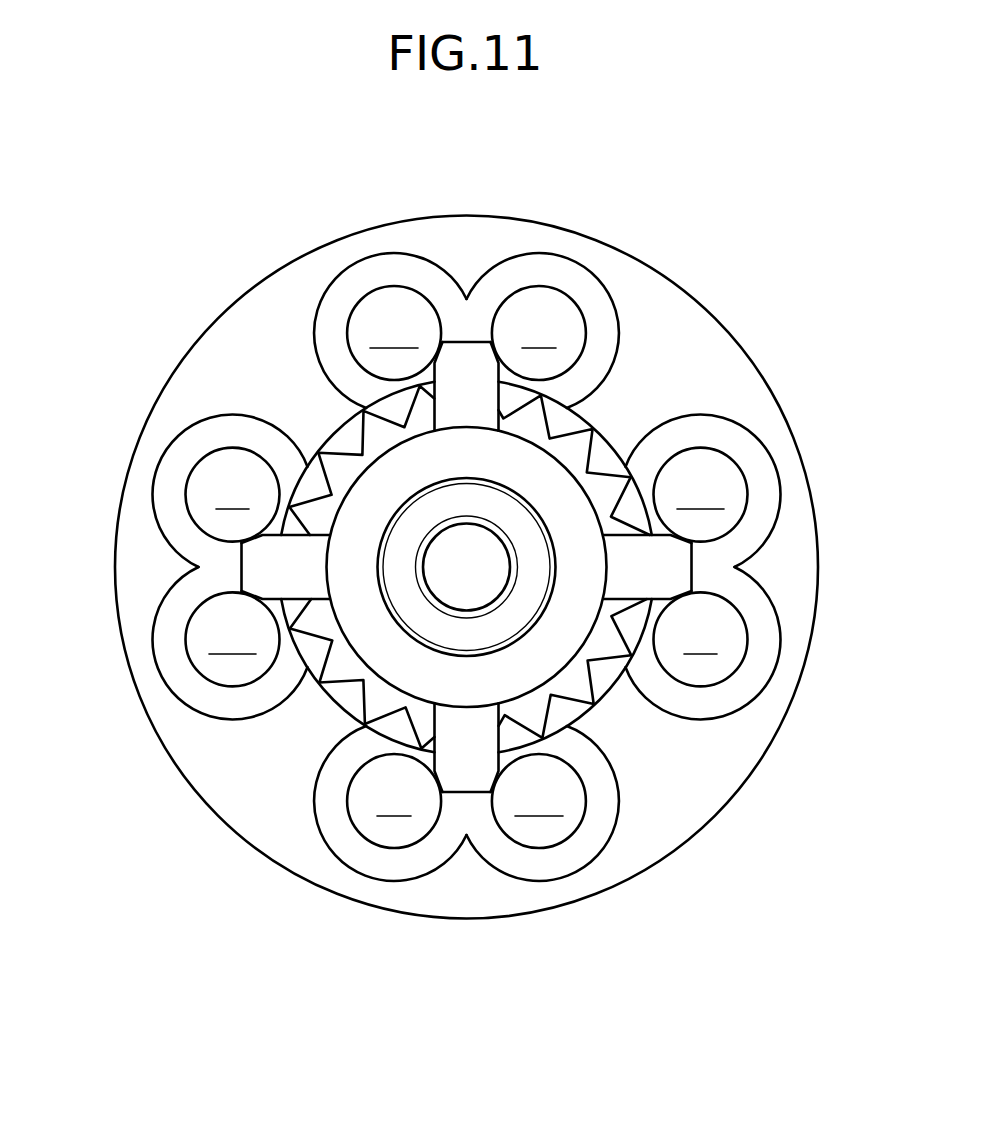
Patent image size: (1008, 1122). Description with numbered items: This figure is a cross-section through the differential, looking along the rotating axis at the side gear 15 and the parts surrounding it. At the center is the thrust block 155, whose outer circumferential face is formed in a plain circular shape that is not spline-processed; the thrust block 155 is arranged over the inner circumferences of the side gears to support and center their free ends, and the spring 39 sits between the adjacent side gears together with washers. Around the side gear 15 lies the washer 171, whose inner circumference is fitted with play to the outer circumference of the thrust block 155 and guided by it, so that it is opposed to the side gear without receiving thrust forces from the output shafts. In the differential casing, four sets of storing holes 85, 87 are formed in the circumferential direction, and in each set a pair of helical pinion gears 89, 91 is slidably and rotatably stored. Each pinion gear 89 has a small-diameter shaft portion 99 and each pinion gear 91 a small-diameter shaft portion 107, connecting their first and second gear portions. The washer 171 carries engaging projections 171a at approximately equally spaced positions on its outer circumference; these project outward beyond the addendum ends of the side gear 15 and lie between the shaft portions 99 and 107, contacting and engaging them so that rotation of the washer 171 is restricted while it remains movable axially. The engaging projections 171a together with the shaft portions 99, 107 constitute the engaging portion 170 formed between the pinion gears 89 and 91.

The side gear 15 is at (585, 440).
The spring 39 is at (580, 513).
The storing hole 85 is at (490, 551).
The storing hole 87 is at (459, 573).
The pinion gear 89 is at (490, 574).
The pinion gear 91 is at (465, 595).
The shaft portion 99 is at (595, 292).
The shaft portion 107 is at (328, 305).
The thrust block 155 is at (410, 537).
The engaging portion 170 is at (451, 332).
The washer 171 is at (602, 696).
The engaging projection 171a is at (480, 352).